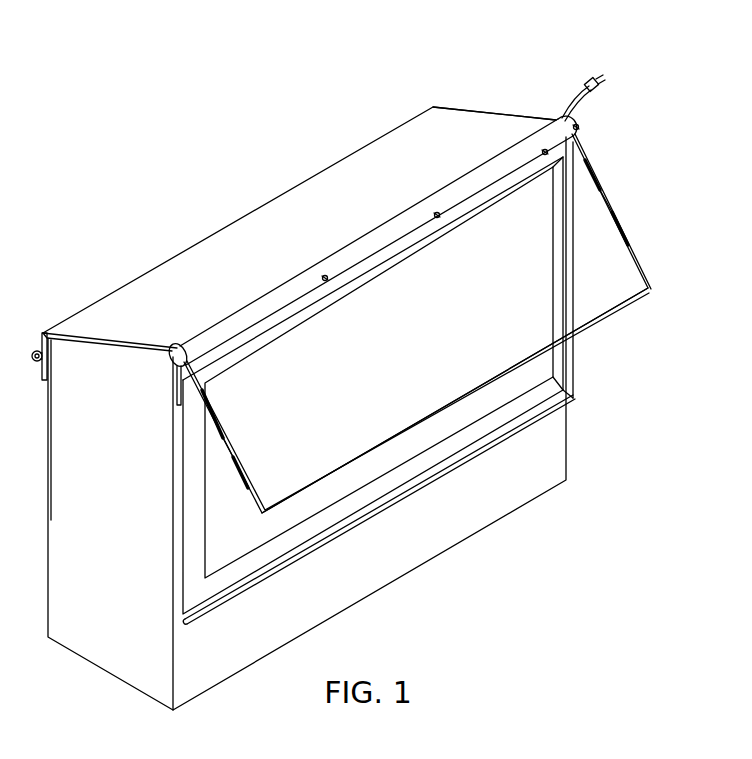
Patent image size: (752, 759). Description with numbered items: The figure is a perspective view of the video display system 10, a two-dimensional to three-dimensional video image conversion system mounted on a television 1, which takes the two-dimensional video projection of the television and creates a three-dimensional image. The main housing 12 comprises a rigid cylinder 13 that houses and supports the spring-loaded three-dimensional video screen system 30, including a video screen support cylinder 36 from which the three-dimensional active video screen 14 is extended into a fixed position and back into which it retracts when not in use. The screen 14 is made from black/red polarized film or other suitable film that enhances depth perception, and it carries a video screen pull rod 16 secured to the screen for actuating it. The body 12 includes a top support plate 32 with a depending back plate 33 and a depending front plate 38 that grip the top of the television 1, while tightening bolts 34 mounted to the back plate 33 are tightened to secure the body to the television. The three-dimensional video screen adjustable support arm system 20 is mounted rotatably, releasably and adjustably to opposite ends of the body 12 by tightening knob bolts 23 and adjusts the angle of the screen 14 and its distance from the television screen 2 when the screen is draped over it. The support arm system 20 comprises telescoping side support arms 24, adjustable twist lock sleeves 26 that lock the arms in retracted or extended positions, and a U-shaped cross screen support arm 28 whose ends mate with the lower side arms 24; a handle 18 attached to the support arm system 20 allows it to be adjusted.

The television 1 is at (48, 542).
The television screen 2 is at (217, 540).
The video display system 10 is at (516, 67).
The main housing 12 is at (352, 232).
The rigid cylinder 13 is at (428, 197).
The 3-D active video screen 14 is at (576, 367).
The video screen pull rod 16 is at (576, 398).
The handle 18 is at (544, 150).
The 3-D video screen adjustable support arm system 20 is at (624, 215).
The tightening knob bolts 23 is at (579, 127).
The side support arms 24 is at (596, 163).
The adjustable twist lock sleeves 26 is at (609, 197).
The U-shaped cross screen support arm 28 is at (618, 313).
The 3-D video screen system 30 is at (157, 310).
The top support plate 32 is at (227, 302).
The back plate 33 is at (43, 337).
The tightening bolts 34 is at (37, 363).
The video screen support cylinder 36 is at (604, 80).
The front plate 38 is at (176, 390).